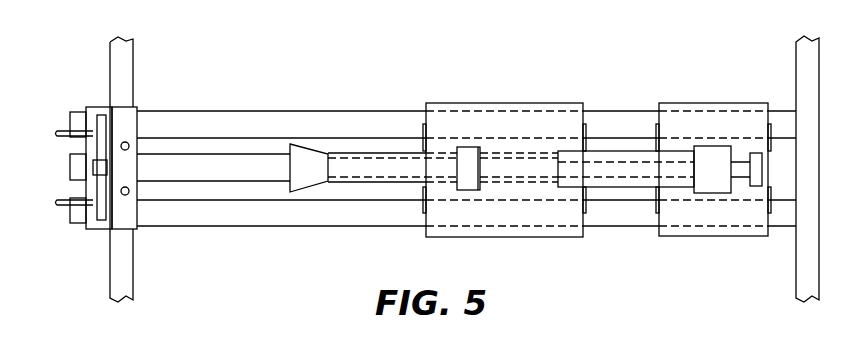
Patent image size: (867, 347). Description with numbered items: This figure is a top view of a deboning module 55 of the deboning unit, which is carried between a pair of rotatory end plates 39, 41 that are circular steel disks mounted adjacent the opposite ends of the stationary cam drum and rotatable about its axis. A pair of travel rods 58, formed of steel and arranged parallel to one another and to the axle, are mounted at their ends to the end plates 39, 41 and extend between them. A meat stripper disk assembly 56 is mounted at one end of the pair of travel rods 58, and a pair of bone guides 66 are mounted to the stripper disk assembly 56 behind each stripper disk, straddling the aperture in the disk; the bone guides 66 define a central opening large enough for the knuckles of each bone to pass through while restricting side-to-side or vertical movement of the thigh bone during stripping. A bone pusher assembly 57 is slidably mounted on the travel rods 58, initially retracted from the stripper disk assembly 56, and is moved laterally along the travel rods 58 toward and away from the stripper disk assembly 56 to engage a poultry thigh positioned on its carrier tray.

The rotatory end plate 39 is at (125, 76).
The rotatory end plate 41 is at (808, 79).
The deboning module 55 is at (353, 72).
The meat stripper disk assembly 56 is at (100, 95).
The bone pusher assembly 57 is at (554, 95).
The travel rods 58 is at (217, 120).
The bone guides 66 is at (60, 131).